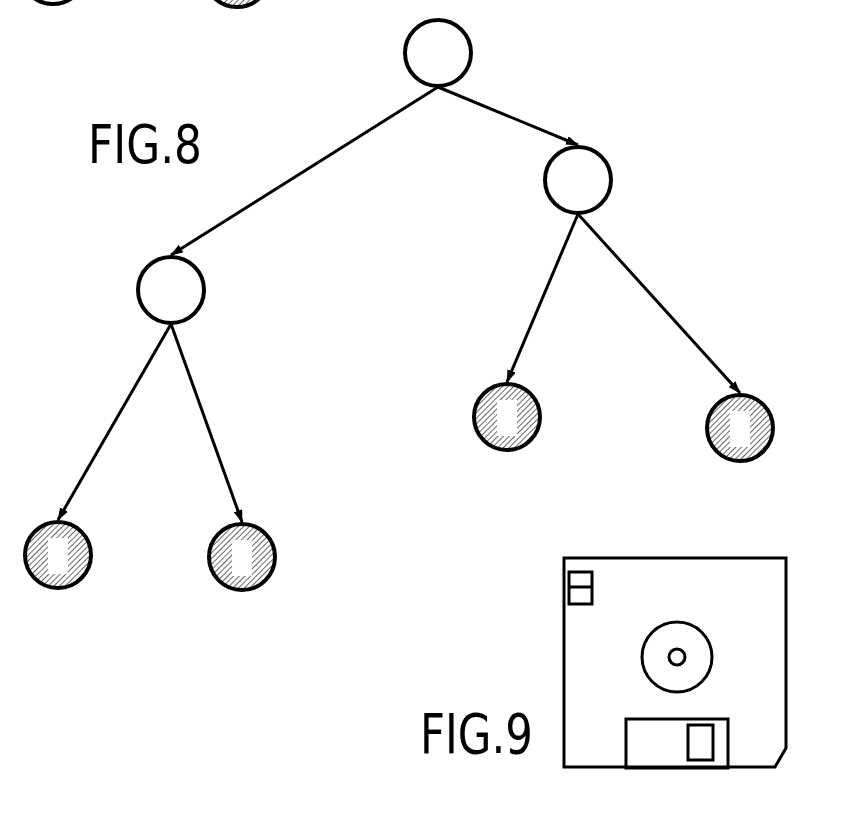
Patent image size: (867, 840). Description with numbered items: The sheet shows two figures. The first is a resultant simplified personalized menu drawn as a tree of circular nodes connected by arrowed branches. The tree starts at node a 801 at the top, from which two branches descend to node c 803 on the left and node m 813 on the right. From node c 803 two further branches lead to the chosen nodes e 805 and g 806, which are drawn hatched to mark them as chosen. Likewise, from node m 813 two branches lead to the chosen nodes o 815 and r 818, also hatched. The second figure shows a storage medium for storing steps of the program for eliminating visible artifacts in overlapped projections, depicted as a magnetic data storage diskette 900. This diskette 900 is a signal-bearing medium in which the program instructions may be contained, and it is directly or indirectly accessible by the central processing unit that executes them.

In FIG. 8, the node a 801 is at (470, 38).
In FIG. 8, the node m 813 is at (603, 157).
In FIG. 8, the node c 803 is at (138, 275).
In FIG. 8, the node e 805 is at (88, 533).
In FIG. 8, the node g 806 is at (273, 535).
In FIG. 8, the node o 815 is at (538, 373).
In FIG. 8, the node r 818 is at (760, 398).
In FIG. 9, the magnetic data storage diskette 900 is at (725, 557).